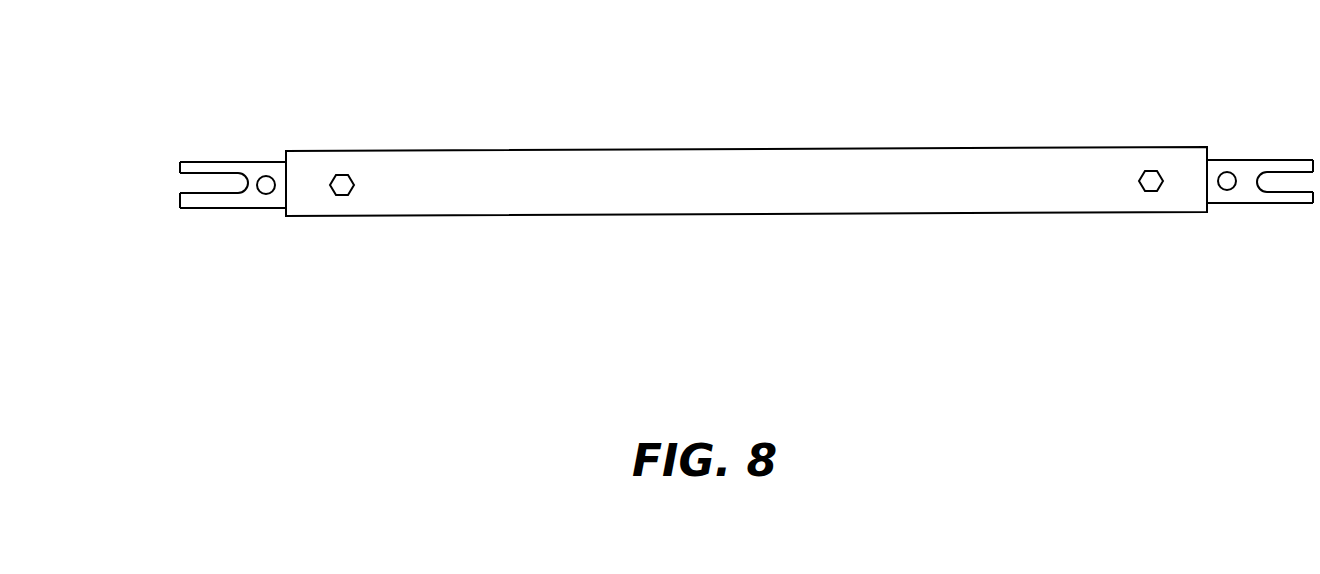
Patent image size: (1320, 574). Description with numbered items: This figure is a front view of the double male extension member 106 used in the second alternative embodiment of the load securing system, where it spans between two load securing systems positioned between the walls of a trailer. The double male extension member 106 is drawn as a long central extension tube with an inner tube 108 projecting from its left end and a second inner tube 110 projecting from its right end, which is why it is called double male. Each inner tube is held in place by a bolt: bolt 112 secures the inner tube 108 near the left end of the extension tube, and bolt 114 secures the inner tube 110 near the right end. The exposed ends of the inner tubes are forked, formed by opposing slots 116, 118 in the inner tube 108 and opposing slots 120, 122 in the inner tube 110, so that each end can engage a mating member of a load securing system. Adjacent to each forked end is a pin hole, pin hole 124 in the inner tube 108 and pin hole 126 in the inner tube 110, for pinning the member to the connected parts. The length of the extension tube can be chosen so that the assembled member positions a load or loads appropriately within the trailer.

The double male extension member 106 is at (722, 149).
The inner tube 108 is at (271, 162).
The inner tube 110 is at (1216, 160).
The bolt 112 is at (342, 196).
The bolt 114 is at (1151, 170).
The slot 116 is at (202, 175).
The slot 118 is at (205, 207).
The slot 120 is at (1299, 204).
The slot 122 is at (1278, 172).
The pin hole 124 is at (265, 195).
The pin hole 126 is at (1224, 191).